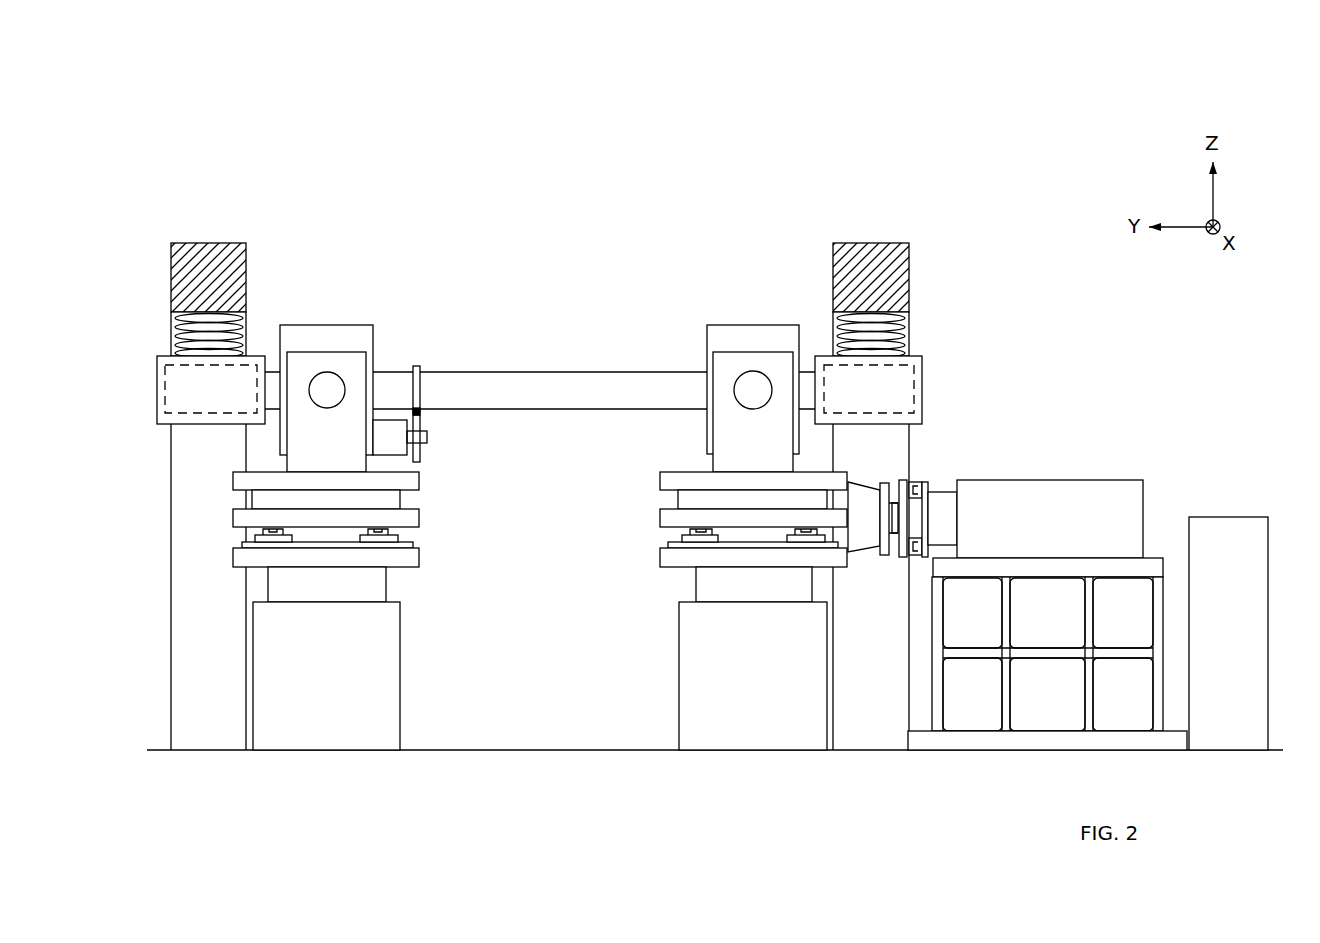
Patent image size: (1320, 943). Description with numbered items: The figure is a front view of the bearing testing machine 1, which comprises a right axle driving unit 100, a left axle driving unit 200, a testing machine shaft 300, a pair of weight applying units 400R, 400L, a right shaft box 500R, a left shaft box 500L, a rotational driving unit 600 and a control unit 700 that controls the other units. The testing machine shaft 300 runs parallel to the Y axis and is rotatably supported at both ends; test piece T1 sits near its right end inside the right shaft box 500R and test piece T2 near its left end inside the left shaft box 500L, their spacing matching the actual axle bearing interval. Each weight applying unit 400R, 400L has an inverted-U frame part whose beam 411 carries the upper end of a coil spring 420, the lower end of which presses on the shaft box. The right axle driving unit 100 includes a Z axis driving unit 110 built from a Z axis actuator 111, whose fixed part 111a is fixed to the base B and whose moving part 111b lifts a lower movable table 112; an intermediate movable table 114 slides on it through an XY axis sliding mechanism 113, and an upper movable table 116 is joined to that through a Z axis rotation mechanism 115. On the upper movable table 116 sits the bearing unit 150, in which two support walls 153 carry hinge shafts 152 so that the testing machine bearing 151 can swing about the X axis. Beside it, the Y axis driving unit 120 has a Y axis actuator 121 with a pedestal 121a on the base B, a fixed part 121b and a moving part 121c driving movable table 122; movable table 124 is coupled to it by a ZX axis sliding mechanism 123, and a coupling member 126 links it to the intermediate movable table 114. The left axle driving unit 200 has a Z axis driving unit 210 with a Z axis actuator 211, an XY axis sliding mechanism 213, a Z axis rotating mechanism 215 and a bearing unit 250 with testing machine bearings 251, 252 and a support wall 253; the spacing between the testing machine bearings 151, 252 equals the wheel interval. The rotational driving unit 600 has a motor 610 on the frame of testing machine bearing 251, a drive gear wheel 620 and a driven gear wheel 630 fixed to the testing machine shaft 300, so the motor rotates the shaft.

The bearing testing machine 1 is at (1000, 207).
The right axle driving unit 100 is at (697, 490).
The Z axis driving unit 110 is at (697, 599).
The Z axis actuator 111 is at (687, 658).
The fixed part 111a is at (678, 675).
The moving part 111b is at (695, 583).
The lower movable table 112 is at (659, 558).
The XY axis sliding mechanism 113 is at (659, 531).
The intermediate movable table 114 is at (659, 518).
The Z axis rotation mechanism 115 is at (677, 498).
The upper movable table 116 is at (659, 478).
The Y axis driving unit 120 is at (1015, 566).
The Y axis actuator 121 is at (1047, 566).
The pedestal 121a is at (1047, 556).
The fixed part 121b is at (1013, 478).
The moving part 121c is at (957, 490).
The movable table 122 is at (923, 483).
The ZX axis sliding mechanism 123 is at (899, 565).
The movable table 124 is at (882, 481).
The coupling member 126 is at (868, 488).
The bearing unit 150 is at (708, 371).
The testing machine bearing 151 is at (706, 350).
The hinge shaft 152 is at (740, 404).
The support wall 153 is at (712, 468).
The left axle driving unit 200 is at (410, 498).
The Z axis driving unit 210 is at (369, 611).
The Z axis actuator 211 is at (402, 648).
The XY axis sliding mechanism 213 is at (423, 537).
The Z axis rotating mechanism 215 is at (420, 482).
The bearing unit 250 is at (393, 384).
The testing machine bearing 251 is at (374, 328).
The testing machine bearing 252 is at (345, 381).
The support wall 253 is at (367, 381).
The testing machine shaft 300 is at (526, 367).
The weight applying unit 400L is at (216, 236).
The weight applying unit 400R is at (936, 463).
The beam 411 is at (913, 283).
The coil spring 420 is at (913, 340).
The left shaft box 500L is at (211, 432).
The right shaft box 500R is at (912, 376).
The rotational driving unit 600 is at (480, 422).
The motor 610 is at (421, 452).
The drive gear wheel 620 is at (428, 437).
The driven gear wheel 630 is at (421, 378).
The control unit 700 is at (1228, 513).
The test piece T1 is at (923, 390).
The test piece T2 is at (217, 418).
The base B is at (553, 750).